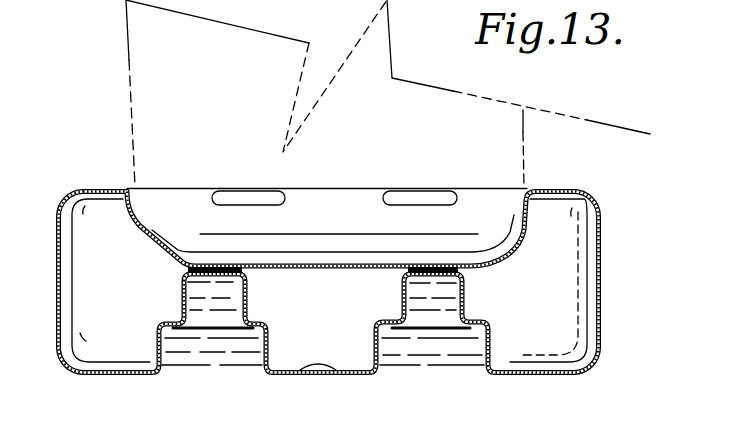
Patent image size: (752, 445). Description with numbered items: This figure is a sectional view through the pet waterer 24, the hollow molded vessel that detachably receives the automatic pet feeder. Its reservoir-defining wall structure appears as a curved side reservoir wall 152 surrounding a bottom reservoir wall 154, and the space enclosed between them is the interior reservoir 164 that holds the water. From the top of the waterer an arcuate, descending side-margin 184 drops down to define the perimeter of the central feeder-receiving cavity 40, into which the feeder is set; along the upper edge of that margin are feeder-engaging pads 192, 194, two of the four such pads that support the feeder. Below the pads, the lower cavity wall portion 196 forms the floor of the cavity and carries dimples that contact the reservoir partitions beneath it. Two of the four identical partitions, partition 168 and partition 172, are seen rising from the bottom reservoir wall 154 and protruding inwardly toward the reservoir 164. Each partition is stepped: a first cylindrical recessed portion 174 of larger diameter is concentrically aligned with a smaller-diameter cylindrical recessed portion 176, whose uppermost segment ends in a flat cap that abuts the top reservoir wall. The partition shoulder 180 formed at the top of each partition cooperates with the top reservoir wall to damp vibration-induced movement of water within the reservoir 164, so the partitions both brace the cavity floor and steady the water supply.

The pet waterer 24 is at (604, 195).
The feeder-receiving cavity 40 is at (457, 228).
The side reservoir wall 152 is at (600, 305).
The bottom reservoir wall 154 is at (320, 377).
The interior reservoir 164 is at (356, 282).
The partition 168 is at (182, 278).
The partition 172 is at (466, 300).
The first cylindrical recessed portion 174 is at (268, 348).
The cylindrical recessed portion 176 is at (245, 289).
The partition shoulder 180 is at (272, 255).
The side-margin 184 is at (148, 232).
The feeder-engaging pad 192 is at (252, 192).
The feeder-engaging pad 194 is at (427, 194).
The lower cavity wall portion 196 is at (320, 262).